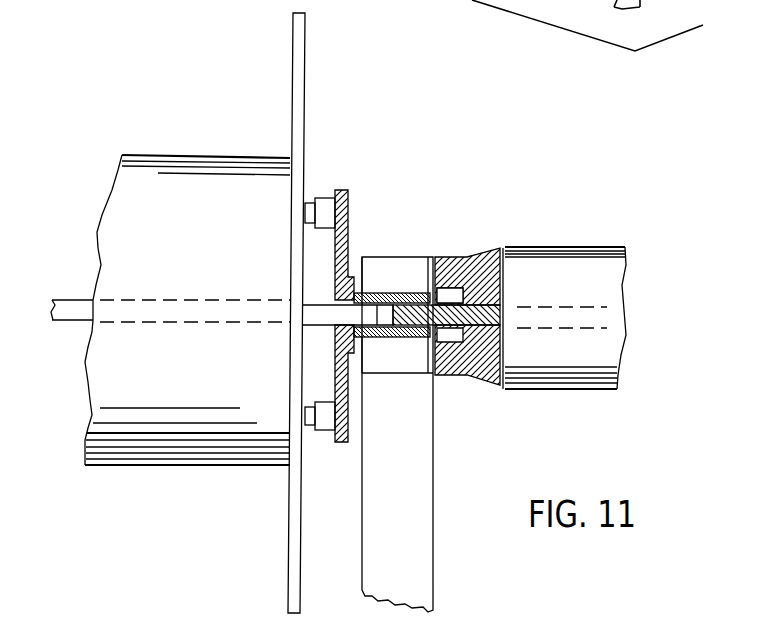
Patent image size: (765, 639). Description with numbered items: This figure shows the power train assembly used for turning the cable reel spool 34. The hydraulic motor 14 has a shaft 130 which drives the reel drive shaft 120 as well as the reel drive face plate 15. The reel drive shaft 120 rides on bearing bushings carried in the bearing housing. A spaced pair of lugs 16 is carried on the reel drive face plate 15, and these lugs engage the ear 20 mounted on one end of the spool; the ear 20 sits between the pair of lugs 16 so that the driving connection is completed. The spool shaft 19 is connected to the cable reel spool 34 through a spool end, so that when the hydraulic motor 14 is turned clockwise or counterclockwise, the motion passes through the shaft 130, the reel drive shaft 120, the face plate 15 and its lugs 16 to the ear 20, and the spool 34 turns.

The hydraulic motor 14 is at (585, 270).
The reel drive face plate 15 is at (388, 190).
The lugs 16 is at (327, 207).
The spool shaft 19 is at (368, 315).
The ear 20 is at (307, 212).
The cable reel spool 34 is at (212, 175).
The reel drive shaft 120 is at (357, 292).
The shaft 130 is at (478, 322).